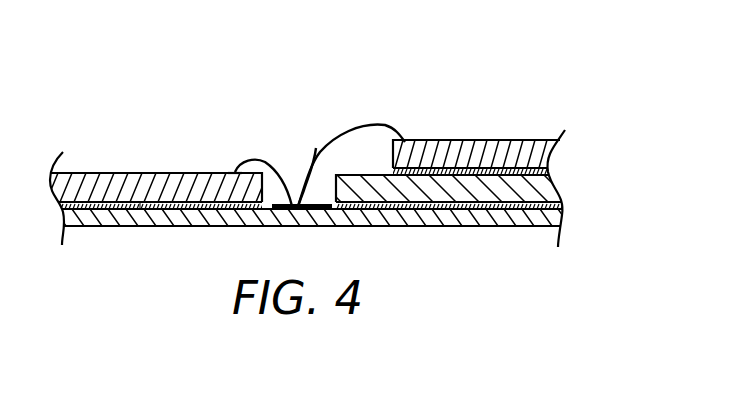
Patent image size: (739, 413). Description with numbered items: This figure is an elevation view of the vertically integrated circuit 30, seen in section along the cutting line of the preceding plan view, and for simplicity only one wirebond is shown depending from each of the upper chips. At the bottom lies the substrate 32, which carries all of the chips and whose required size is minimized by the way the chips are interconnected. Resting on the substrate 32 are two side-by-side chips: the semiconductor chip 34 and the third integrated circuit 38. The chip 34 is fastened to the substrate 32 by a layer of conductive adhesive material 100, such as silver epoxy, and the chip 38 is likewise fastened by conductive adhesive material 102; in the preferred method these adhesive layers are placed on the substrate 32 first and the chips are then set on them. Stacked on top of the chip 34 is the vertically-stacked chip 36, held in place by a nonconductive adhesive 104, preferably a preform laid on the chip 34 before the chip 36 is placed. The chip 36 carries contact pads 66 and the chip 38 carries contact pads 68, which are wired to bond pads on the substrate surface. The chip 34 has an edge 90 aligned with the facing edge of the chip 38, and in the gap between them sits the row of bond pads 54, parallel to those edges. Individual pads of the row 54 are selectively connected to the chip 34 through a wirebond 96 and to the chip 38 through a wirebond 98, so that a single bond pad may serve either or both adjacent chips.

The vertically integrated circuit 30 is at (424, 86).
The substrate 32 is at (562, 215).
The semiconductor chip 34 is at (550, 193).
The vertically-stacked chip 36 is at (505, 148).
The third integrated circuit 38 is at (112, 173).
The row of bond pads 54 is at (333, 212).
The contact pads 66 is at (408, 140).
The contact pads 68 is at (235, 173).
The edge 90 is at (316, 148).
The wirebond 96 is at (355, 127).
The wirebond 98 is at (255, 158).
The conductive adhesive material 100 is at (458, 207).
The conductive adhesive material 102 is at (147, 208).
The nonconductive adhesive 104 is at (500, 172).